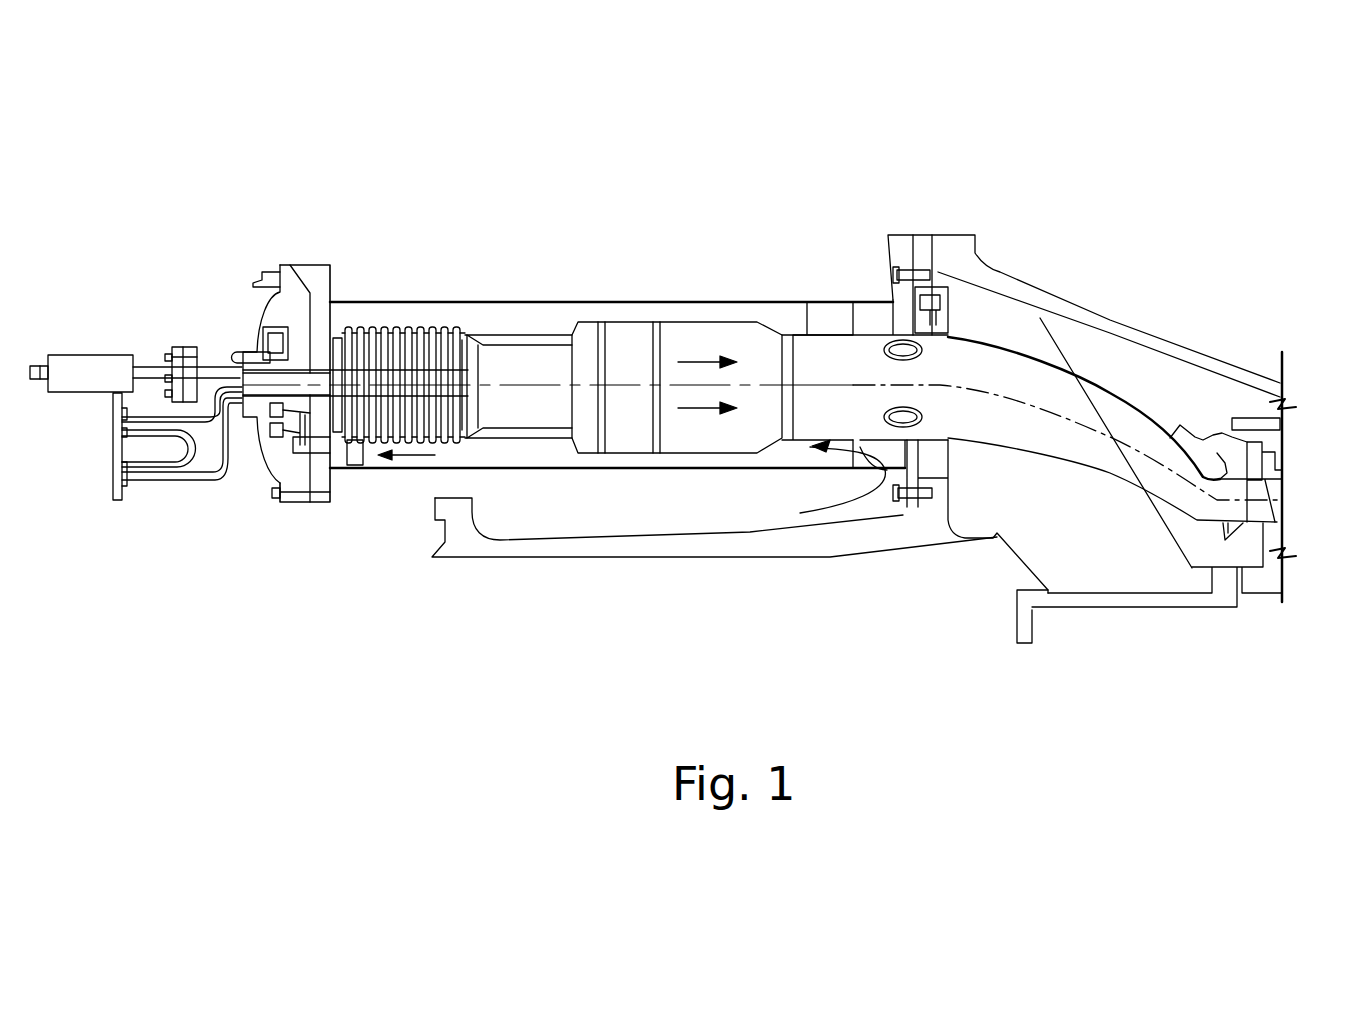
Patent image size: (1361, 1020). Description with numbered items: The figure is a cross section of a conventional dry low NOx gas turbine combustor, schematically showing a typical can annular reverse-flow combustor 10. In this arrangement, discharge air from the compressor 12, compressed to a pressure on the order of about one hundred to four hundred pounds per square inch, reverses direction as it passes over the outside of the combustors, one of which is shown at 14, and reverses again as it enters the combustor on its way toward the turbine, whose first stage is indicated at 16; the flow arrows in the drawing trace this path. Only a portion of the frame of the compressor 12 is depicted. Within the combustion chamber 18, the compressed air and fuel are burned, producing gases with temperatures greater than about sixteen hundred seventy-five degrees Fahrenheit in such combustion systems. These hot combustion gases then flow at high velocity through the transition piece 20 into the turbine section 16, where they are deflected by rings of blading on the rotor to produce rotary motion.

The can annular reverse-flow combustor 10 is at (425, 152).
The compressor 12 is at (523, 575).
The combustor 14 is at (391, 321).
The turbine section first stage 16 is at (1277, 488).
The combustion chamber 18 is at (540, 362).
The transition piece 20 is at (1037, 387).